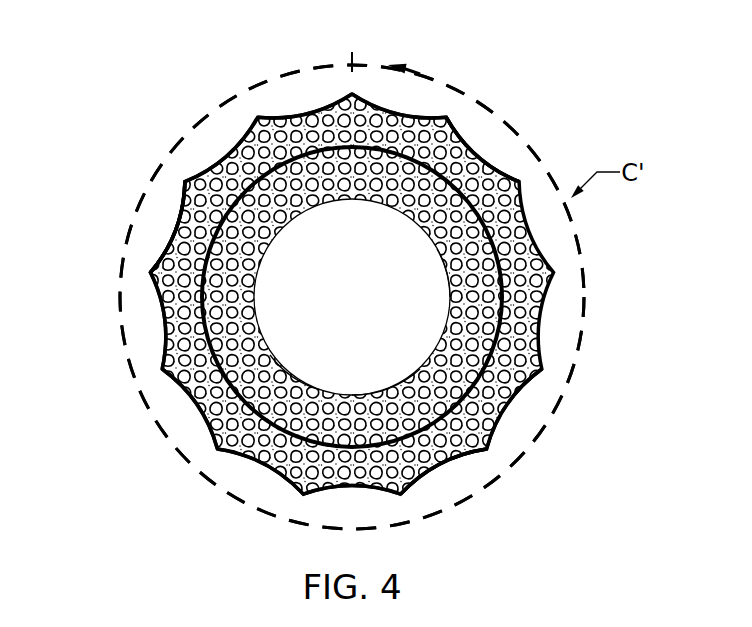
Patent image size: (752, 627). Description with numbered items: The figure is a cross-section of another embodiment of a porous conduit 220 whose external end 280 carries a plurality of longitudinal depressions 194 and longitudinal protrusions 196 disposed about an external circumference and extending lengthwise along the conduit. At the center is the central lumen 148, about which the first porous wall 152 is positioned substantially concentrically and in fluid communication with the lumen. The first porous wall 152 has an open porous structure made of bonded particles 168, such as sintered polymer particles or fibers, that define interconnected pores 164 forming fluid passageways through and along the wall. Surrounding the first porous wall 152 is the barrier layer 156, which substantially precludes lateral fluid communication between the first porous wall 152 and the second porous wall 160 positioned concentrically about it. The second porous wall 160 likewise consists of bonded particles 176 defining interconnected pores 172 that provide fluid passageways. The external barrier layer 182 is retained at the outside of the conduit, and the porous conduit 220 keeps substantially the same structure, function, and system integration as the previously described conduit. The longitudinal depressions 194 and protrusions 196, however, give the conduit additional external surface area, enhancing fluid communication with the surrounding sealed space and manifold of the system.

The central lumen 148 is at (330, 256).
The first porous wall 152 is at (446, 264).
The barrier layer 156 is at (516, 308).
The second porous wall 160 is at (533, 373).
The interconnected pores 164 is at (417, 374).
The bonded particles 168 is at (297, 386).
The interconnected pores 172 is at (153, 280).
The bonded particles 176 is at (172, 243).
The external barrier layer 182 is at (493, 163).
The longitudinal depressions 194 is at (310, 111).
The longitudinal protrusions 196 is at (186, 180).
The porous conduit 220 is at (170, 92).
The external end 280 is at (336, 285).